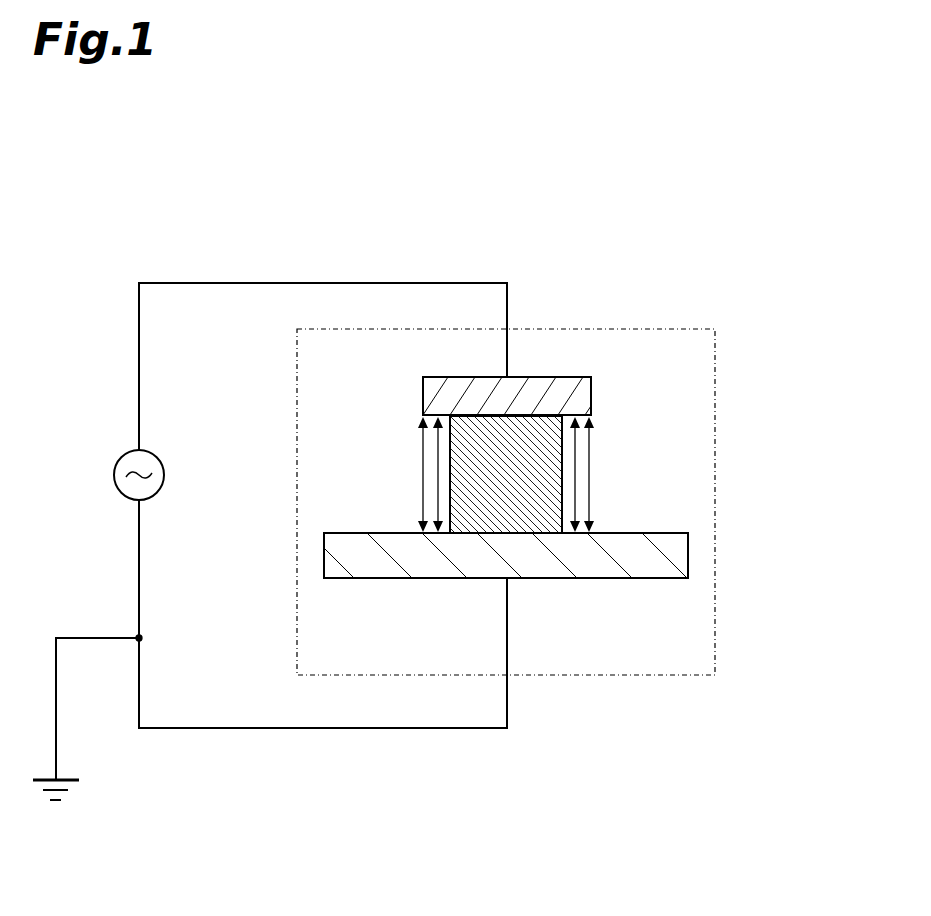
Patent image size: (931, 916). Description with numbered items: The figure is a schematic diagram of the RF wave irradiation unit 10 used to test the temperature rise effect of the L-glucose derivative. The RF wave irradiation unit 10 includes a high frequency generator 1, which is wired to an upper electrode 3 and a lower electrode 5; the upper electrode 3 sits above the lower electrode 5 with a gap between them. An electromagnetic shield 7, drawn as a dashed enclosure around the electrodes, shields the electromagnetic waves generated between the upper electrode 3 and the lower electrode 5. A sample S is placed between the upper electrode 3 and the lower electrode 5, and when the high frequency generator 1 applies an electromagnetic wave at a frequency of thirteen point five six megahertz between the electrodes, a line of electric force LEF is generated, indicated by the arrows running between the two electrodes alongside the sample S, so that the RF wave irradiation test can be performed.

The high frequency generator 1 is at (114, 462).
The upper electrode 3 is at (572, 377).
The lower electrode 5 is at (689, 546).
The electromagnetic shield 7 is at (718, 366).
The RF wave irradiation unit 10 is at (716, 223).
The sample S is at (563, 482).
The line of electric force LEF is at (592, 453).